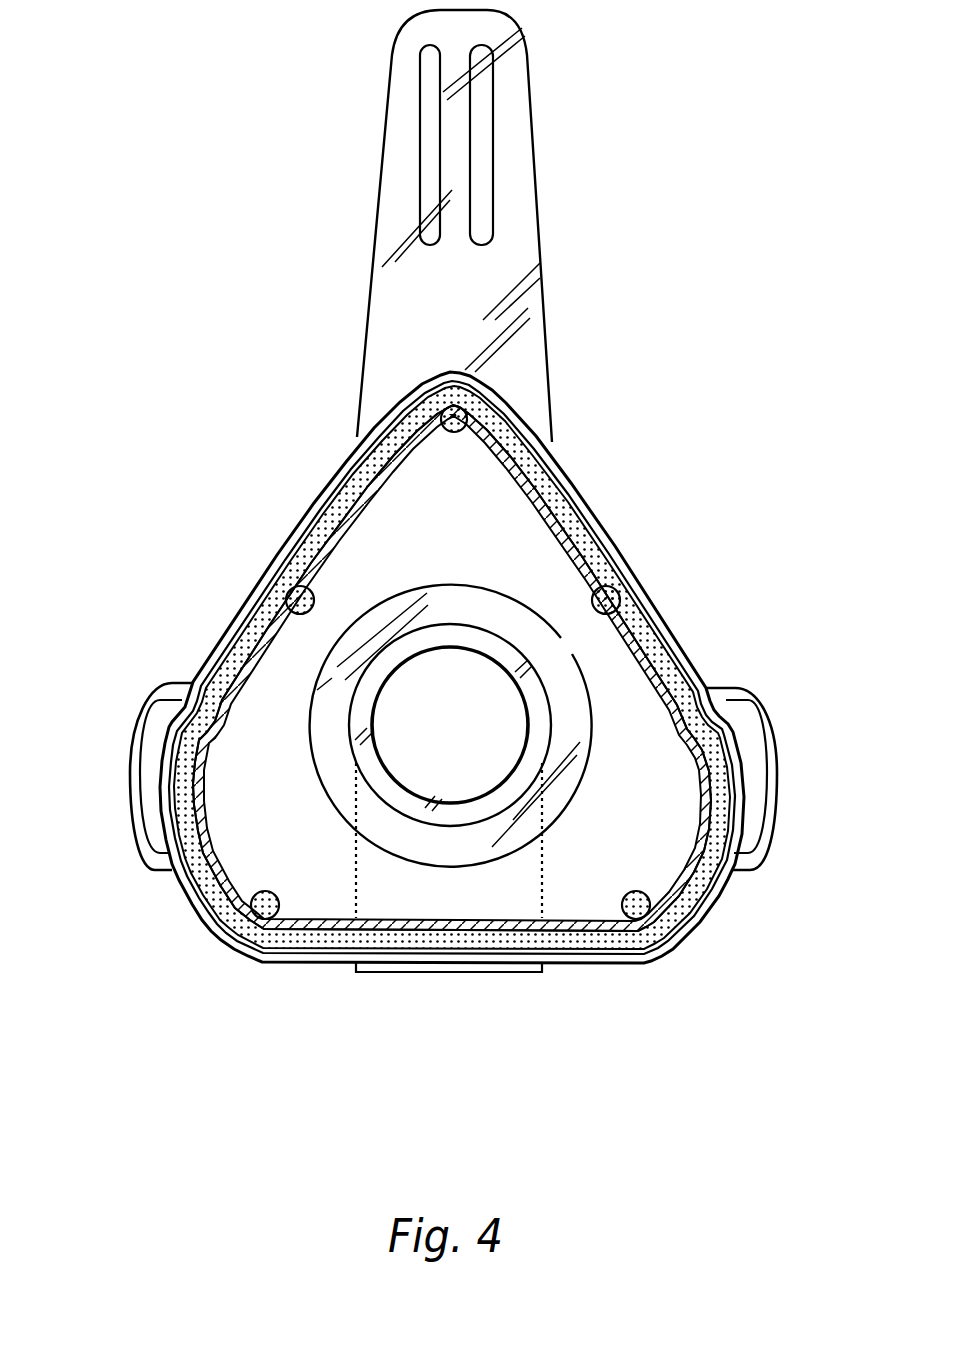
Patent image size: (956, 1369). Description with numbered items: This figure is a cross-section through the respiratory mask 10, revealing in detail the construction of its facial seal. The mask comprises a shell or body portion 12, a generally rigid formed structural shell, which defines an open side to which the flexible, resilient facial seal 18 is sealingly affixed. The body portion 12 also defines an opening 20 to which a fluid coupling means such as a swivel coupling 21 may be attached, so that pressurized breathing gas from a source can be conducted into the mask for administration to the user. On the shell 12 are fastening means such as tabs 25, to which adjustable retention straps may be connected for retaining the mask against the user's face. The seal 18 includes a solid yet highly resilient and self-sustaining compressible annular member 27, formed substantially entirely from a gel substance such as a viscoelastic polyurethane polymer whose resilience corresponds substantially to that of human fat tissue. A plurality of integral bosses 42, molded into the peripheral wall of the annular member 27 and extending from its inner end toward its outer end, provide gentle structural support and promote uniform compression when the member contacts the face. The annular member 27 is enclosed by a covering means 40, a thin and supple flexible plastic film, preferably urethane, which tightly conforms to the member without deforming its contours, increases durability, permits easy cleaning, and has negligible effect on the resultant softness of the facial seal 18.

The respiratory mask 10 is at (700, 404).
The shell or body portion 12 is at (472, 531).
The facial seal 18 is at (340, 471).
The opening 20 is at (468, 738).
The swivel coupling 21 is at (545, 860).
The tabs 25 is at (513, 110).
The annular member 27 is at (252, 627).
The covering means 40 is at (672, 652).
The bosses 42 is at (455, 430).